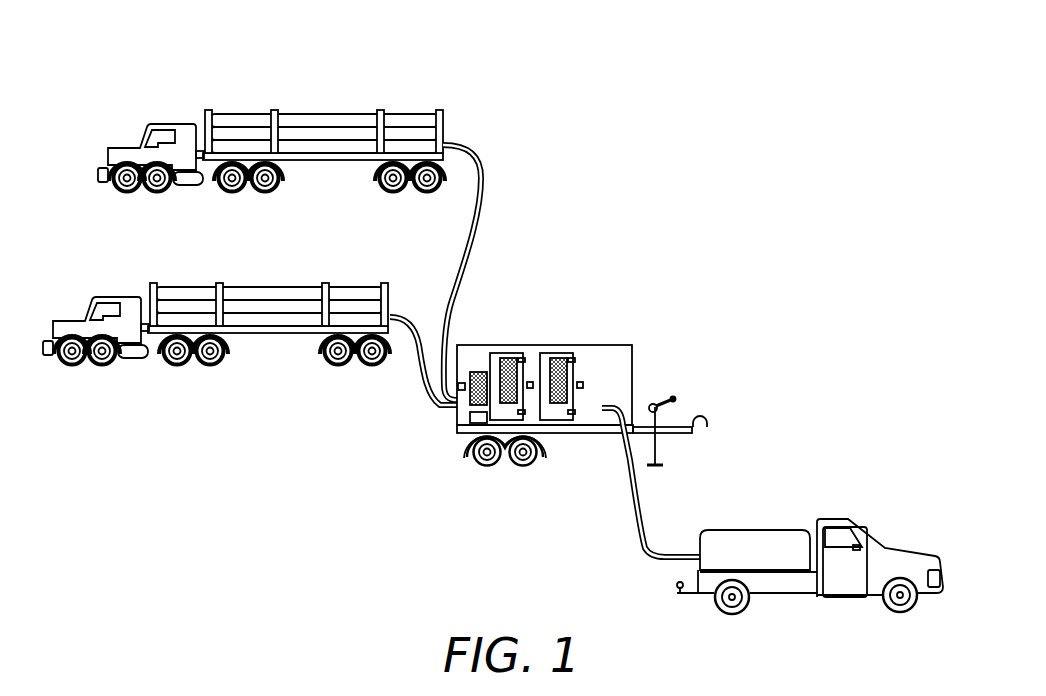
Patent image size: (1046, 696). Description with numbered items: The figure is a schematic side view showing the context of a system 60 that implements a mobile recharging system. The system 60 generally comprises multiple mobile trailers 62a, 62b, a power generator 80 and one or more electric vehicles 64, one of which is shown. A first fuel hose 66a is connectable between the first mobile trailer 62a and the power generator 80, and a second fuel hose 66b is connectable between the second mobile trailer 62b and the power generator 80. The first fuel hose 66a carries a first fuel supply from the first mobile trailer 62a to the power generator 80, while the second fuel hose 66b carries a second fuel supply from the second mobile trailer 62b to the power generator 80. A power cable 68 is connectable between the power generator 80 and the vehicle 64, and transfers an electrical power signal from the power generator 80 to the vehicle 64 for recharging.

The system 60 is at (143, 58).
The first mobile trailer 62a is at (307, 112).
The second mobile trailer 62b is at (247, 285).
The first fuel hose 66a is at (487, 188).
The second fuel hose 66b is at (423, 327).
The power generator 80 is at (540, 345).
The power cable 68 is at (625, 482).
The electric vehicle 64 is at (752, 530).